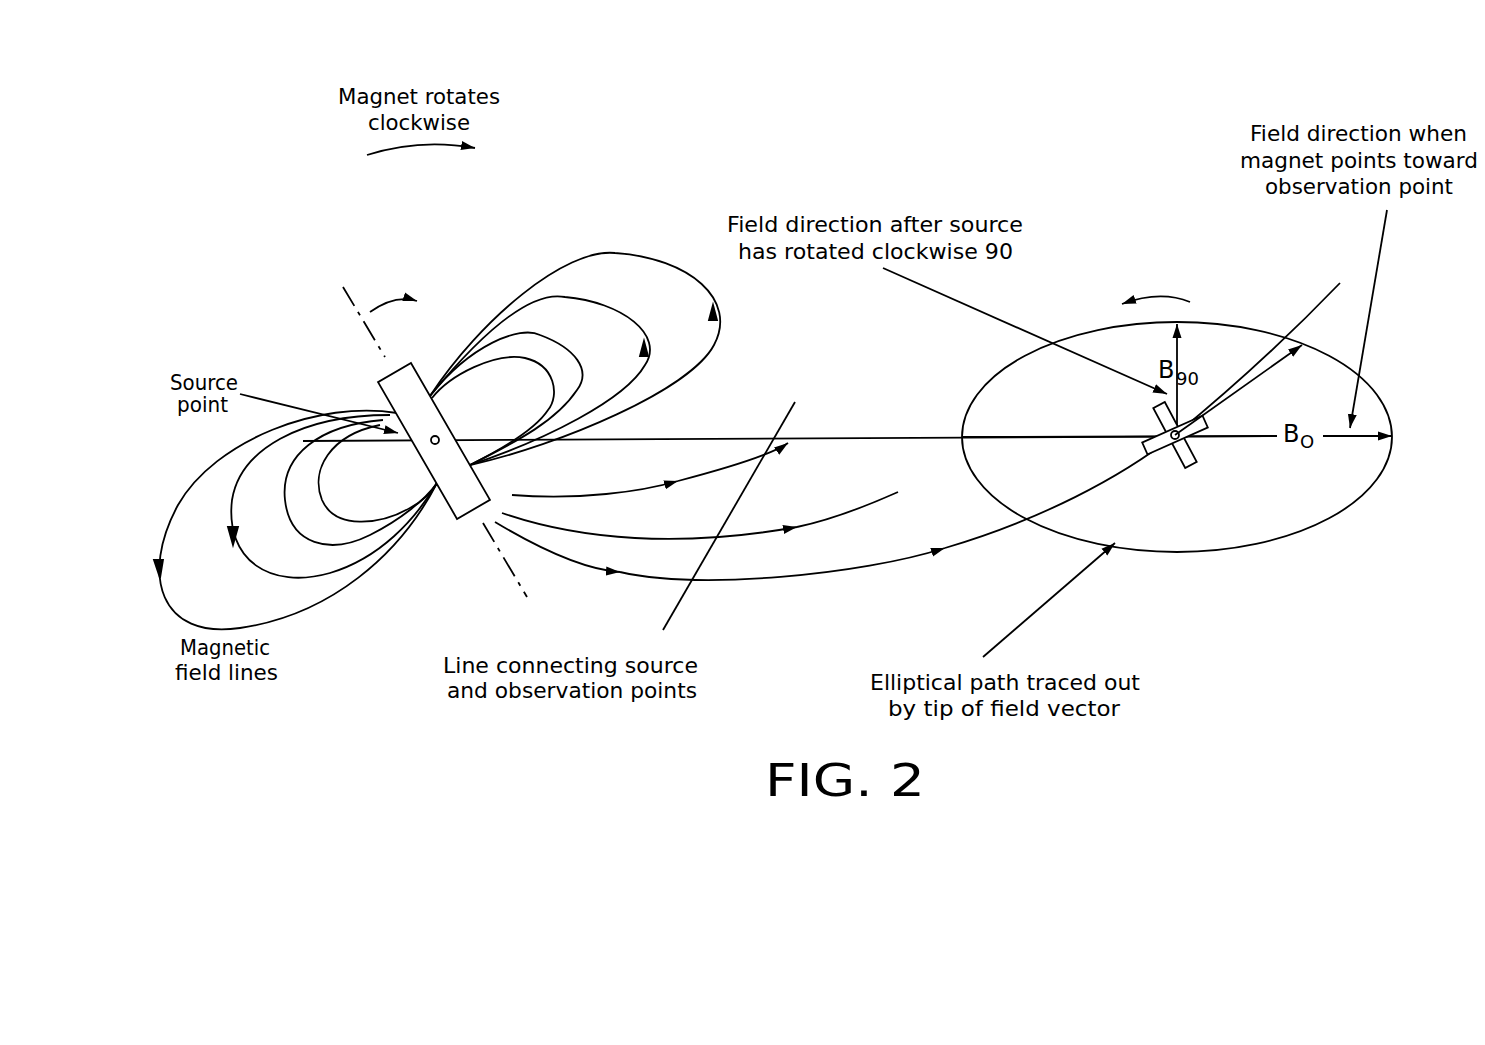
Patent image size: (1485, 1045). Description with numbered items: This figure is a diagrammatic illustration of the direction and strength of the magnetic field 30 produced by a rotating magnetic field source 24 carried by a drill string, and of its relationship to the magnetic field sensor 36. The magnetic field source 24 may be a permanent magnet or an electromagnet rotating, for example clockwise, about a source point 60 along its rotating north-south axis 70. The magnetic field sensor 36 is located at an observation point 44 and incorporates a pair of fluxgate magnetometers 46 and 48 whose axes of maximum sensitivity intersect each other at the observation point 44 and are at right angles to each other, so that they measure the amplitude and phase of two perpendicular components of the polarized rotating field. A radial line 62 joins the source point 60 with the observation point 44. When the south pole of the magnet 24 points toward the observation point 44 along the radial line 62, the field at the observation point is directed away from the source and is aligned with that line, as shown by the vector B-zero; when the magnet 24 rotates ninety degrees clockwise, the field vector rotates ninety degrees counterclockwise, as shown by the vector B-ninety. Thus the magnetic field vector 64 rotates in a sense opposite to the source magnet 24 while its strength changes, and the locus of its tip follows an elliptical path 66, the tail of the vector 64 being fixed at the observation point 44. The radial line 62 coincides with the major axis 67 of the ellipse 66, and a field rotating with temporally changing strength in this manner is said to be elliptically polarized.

The rotating magnetic field source 24 is at (478, 522).
The magnetic field 30 is at (617, 248).
The magnetic field sensor 36 is at (1163, 435).
The observation point 44 is at (1197, 447).
The fluxgate magnetometer 46 is at (1152, 428).
The fluxgate magnetometer 48 is at (1170, 458).
The source point 60 is at (437, 435).
The radial line 62 is at (822, 437).
The magnetic field vector 64 is at (1278, 367).
The elliptical path 66 is at (1003, 368).
The major axis 67 is at (1030, 440).
The rotating north-south axis 70 is at (354, 301).